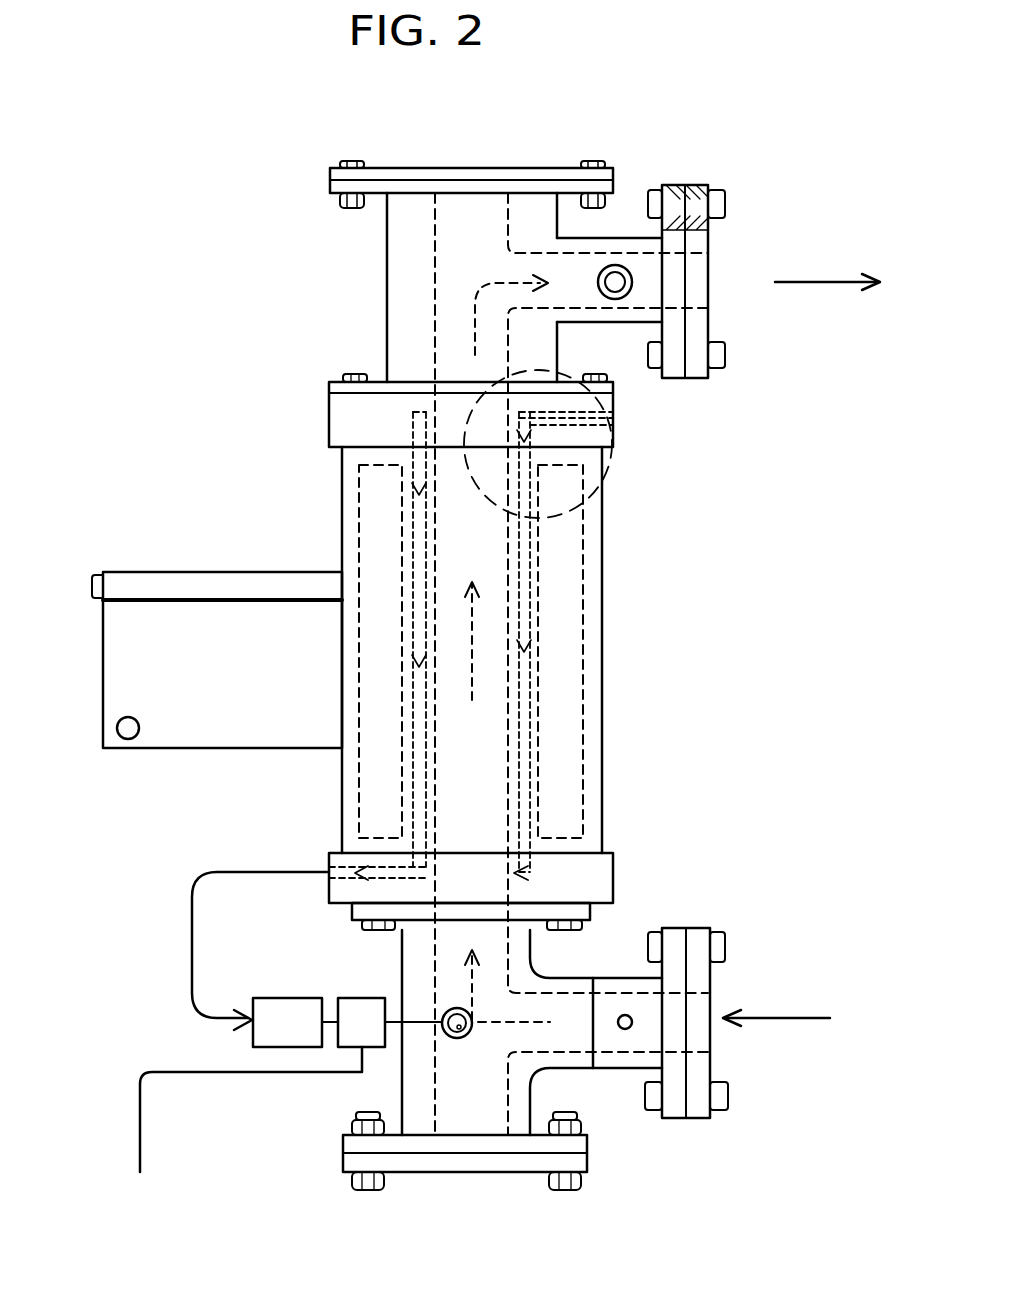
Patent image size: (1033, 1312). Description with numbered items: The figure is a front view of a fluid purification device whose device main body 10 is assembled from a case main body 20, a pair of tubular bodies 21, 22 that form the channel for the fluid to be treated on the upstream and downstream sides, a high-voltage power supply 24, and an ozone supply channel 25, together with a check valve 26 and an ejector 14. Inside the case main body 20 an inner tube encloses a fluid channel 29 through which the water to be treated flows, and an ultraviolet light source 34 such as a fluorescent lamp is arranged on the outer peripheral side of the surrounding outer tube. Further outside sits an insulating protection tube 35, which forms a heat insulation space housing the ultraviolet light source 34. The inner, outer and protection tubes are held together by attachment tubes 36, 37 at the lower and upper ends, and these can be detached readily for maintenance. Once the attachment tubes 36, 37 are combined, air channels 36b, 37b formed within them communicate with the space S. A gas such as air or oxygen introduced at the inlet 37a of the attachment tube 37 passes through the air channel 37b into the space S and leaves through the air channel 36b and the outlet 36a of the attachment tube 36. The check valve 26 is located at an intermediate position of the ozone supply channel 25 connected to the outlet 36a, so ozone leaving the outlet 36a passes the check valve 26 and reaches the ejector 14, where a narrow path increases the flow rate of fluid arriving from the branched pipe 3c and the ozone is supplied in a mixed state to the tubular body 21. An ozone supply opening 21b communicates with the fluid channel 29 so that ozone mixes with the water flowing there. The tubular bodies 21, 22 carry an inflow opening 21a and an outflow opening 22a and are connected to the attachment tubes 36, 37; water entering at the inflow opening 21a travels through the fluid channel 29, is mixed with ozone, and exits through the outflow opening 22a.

The device main body 10 is at (652, 563).
The case main body 20 is at (602, 767).
The tubular body 21 is at (402, 1095).
The inflow opening 21a is at (710, 1030).
The ozone supply opening 21b is at (457, 1038).
The tubular body 22 is at (387, 236).
The outflow opening 22a is at (708, 270).
The high-voltage power supply 24 is at (103, 630).
The ozone supply channel 25 is at (192, 950).
The check valve 26 is at (273, 998).
The ejector 14 is at (355, 998).
The fluid channel 29 is at (474, 728).
The ultraviolet light source 34 is at (357, 516).
The protection tube 35 is at (342, 805).
The attachment tube 36 is at (613, 858).
The outlet 36a is at (329, 868).
The air channel 36b is at (520, 870).
The attachment tube 37 is at (329, 420).
The inlet 37a is at (613, 420).
The air channel 37b is at (613, 425).
The space S is at (522, 672).
The branched pipe 3c is at (140, 1125).